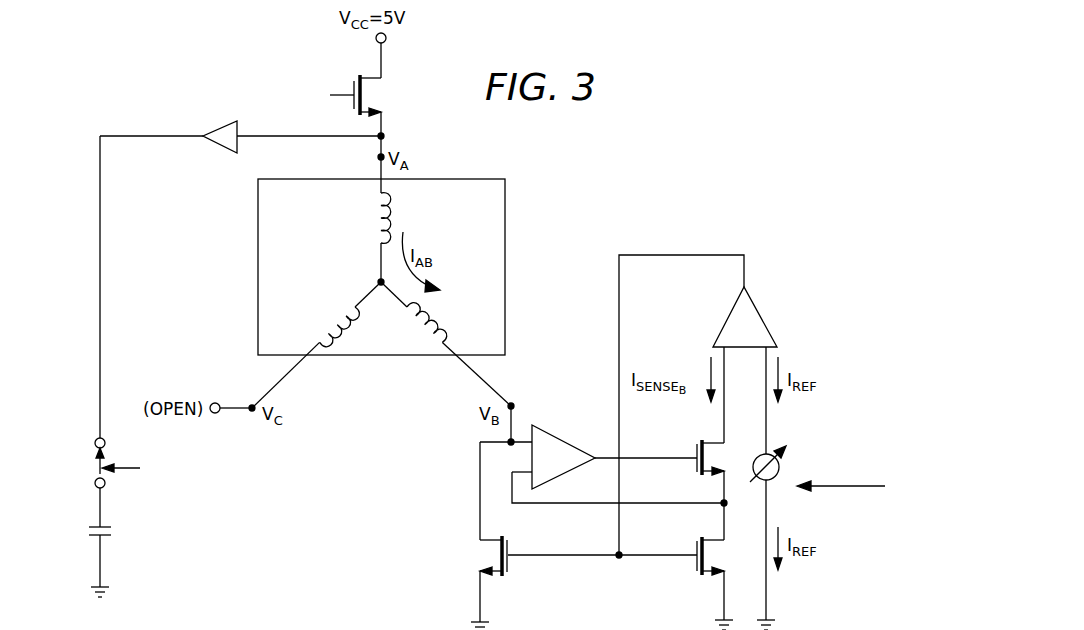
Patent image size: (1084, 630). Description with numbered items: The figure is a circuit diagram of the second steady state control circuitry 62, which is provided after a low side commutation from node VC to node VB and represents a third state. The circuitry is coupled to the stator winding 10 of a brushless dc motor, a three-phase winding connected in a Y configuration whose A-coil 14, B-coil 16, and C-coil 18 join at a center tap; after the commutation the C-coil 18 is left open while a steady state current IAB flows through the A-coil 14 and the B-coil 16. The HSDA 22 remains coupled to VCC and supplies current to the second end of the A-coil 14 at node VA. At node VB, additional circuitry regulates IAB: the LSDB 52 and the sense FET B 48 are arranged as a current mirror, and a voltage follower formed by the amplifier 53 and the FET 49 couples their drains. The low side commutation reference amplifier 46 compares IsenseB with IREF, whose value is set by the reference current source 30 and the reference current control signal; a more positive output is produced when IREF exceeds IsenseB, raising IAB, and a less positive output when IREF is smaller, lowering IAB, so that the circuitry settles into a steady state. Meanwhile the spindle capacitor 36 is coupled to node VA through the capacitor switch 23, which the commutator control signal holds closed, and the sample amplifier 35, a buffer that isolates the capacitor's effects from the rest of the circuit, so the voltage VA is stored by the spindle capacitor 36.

The stator winding 10 is at (506, 262).
The A-coil 14 is at (375, 215).
The B-coil 16 is at (440, 324).
The C-coil 18 is at (321, 327).
The HSDA 22 is at (354, 83).
The capacitor switch 23 is at (97, 462).
The reference current source 30 is at (758, 454).
The sample amplifier 35 is at (222, 121).
The spindle capacitor 36 is at (88, 528).
The low side commutation reference amplifier 46 is at (766, 315).
The sense FET B 48 is at (694, 566).
The FET 49 is at (697, 447).
The LSDB 52 is at (509, 562).
The amplifier 53 is at (559, 445).
The second steady state control circuitry 62 is at (623, 202).